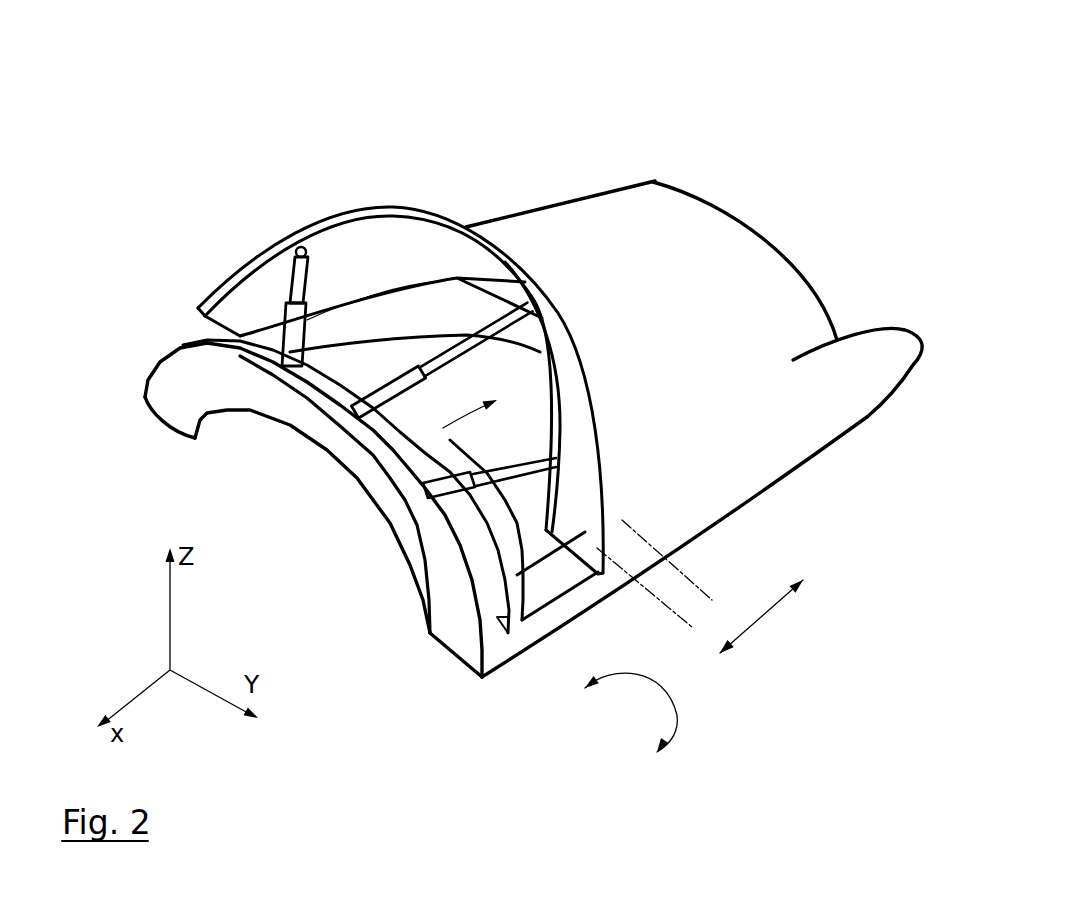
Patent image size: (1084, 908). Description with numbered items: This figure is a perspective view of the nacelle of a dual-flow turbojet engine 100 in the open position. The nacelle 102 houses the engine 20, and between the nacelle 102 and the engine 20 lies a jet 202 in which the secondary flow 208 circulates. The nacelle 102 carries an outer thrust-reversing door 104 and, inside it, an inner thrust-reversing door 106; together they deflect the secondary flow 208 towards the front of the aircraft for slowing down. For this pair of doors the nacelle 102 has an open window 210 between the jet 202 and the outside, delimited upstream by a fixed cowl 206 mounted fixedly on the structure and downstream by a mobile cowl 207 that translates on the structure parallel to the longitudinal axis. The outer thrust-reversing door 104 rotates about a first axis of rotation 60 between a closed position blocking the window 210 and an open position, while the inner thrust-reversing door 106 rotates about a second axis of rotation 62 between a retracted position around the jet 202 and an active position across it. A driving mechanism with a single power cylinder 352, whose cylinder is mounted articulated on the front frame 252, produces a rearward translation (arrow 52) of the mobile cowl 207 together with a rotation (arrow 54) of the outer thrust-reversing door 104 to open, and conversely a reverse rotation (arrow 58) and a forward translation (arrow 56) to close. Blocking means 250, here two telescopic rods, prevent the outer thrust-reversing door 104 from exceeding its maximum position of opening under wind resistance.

The dual-flow turbojet engine 100 is at (815, 132).
The nacelle 102 is at (282, 165).
The outer thrust-reversing door 104 is at (197, 308).
The inner thrust-reversing door 106 is at (380, 323).
The engine 20 is at (480, 387).
The mobile cowl 207 is at (760, 315).
The window 210 is at (270, 326).
The front frame 252 is at (225, 375).
The secondary flow 208 is at (440, 420).
The jet 202 is at (433, 483).
The fixed cowl 206 is at (431, 690).
The power cylinder 352 is at (503, 315).
The blocking means 250 is at (535, 465).
The second axis of rotation 62 is at (690, 572).
The first axis of rotation 60 is at (667, 610).
The arrow (translation towards the rear) 52 is at (782, 609).
The arrow (translation towards the front) 56 is at (707, 663).
The arrow (rotation in the reverse direction) 58 is at (623, 712).
The arrow (rotation) 54 is at (654, 767).